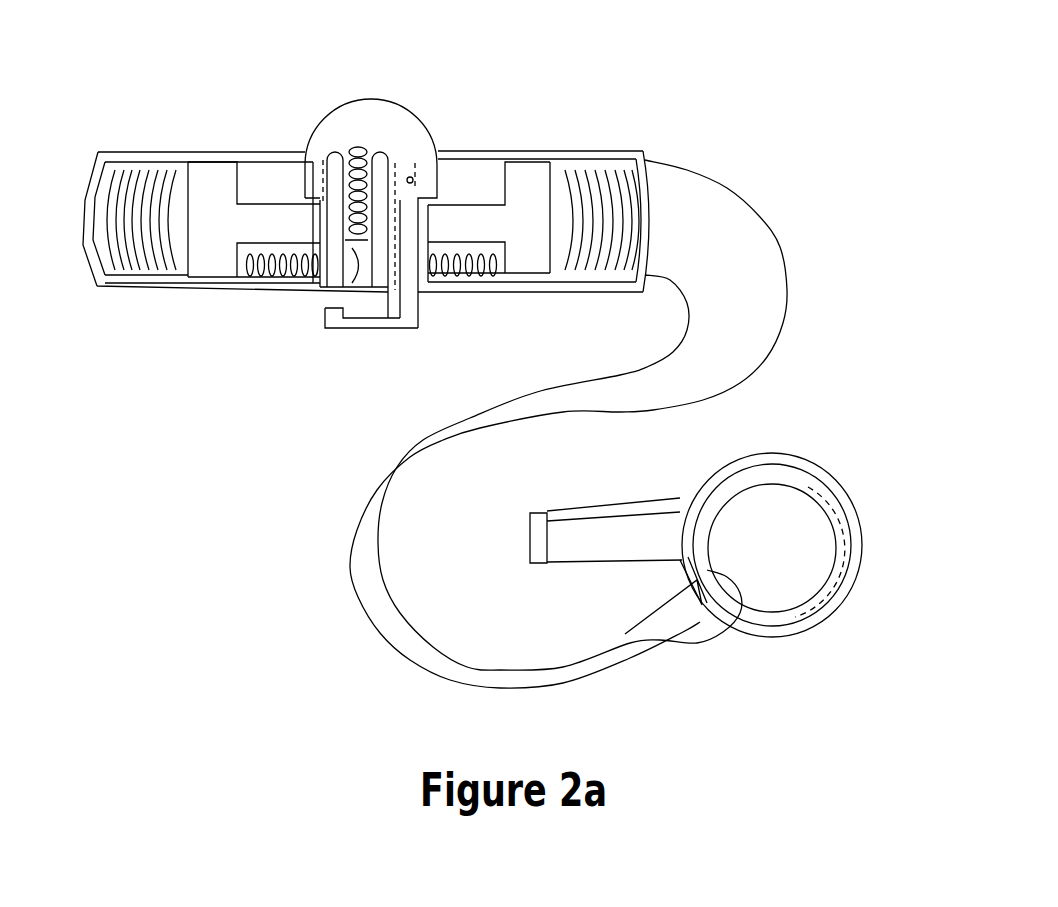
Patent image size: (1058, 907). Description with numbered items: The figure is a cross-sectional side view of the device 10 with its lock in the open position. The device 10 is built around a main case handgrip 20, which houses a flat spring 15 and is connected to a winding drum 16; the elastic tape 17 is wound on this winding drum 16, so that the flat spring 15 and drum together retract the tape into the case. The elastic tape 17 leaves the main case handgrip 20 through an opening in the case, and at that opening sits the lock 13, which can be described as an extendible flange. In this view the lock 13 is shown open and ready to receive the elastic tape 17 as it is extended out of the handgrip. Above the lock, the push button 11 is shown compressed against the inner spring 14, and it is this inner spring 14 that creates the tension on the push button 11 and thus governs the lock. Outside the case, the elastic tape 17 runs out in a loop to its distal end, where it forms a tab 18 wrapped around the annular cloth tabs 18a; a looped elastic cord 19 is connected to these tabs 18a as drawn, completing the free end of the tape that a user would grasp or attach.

The device 10 is at (635, 108).
The push button 11 is at (417, 128).
The lock 13 is at (340, 330).
The inner spring 14 is at (358, 162).
The flat spring 15 is at (267, 277).
The winding drum 16 is at (206, 178).
The elastic tape 17 is at (738, 190).
The tab 18 is at (675, 640).
The annular cloth tabs 18a is at (825, 507).
The looped elastic cord 19 is at (577, 512).
The main case handgrip 20 is at (190, 292).